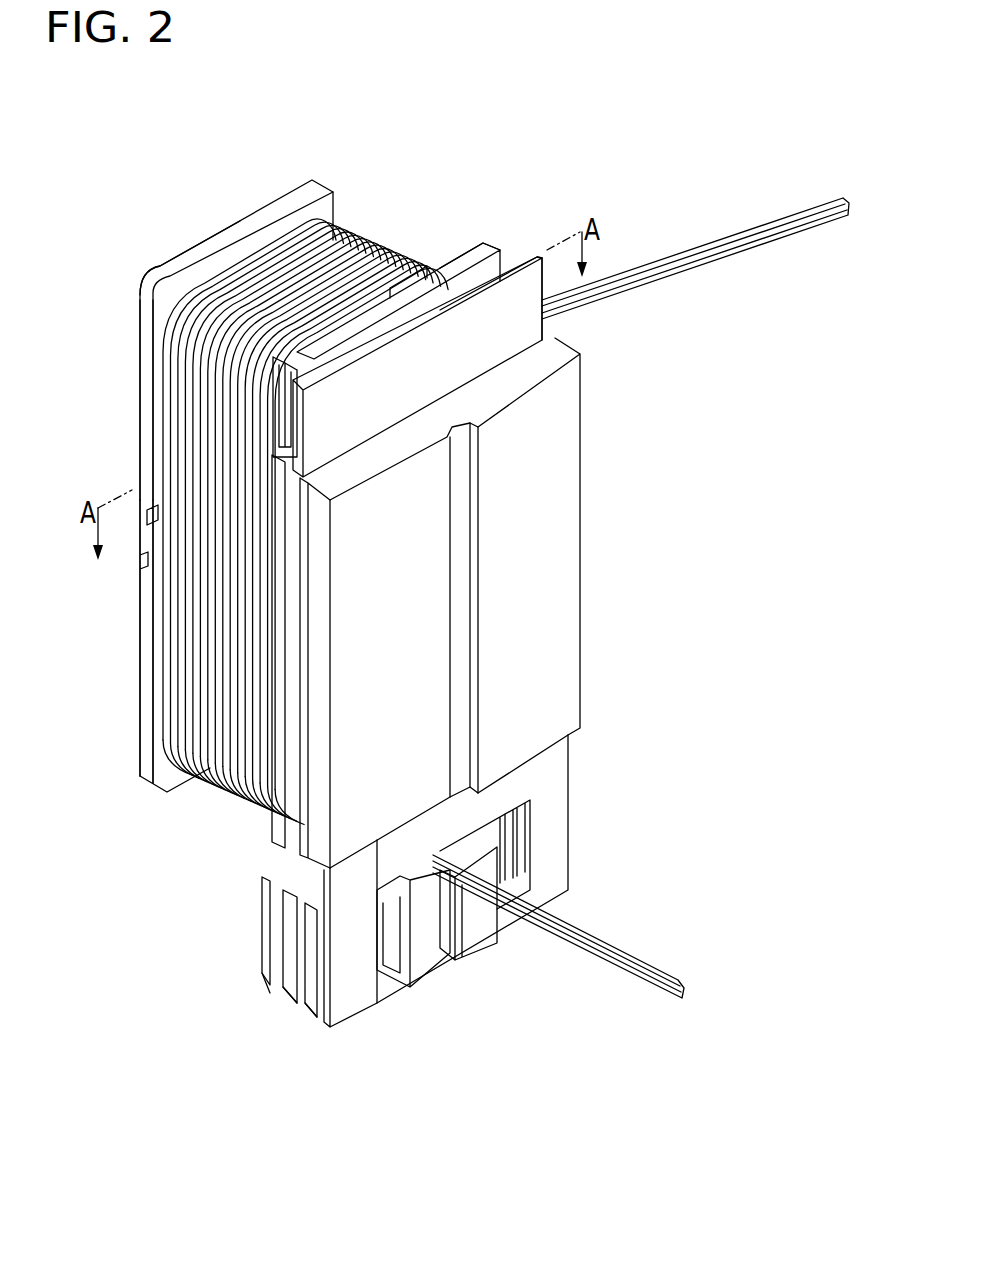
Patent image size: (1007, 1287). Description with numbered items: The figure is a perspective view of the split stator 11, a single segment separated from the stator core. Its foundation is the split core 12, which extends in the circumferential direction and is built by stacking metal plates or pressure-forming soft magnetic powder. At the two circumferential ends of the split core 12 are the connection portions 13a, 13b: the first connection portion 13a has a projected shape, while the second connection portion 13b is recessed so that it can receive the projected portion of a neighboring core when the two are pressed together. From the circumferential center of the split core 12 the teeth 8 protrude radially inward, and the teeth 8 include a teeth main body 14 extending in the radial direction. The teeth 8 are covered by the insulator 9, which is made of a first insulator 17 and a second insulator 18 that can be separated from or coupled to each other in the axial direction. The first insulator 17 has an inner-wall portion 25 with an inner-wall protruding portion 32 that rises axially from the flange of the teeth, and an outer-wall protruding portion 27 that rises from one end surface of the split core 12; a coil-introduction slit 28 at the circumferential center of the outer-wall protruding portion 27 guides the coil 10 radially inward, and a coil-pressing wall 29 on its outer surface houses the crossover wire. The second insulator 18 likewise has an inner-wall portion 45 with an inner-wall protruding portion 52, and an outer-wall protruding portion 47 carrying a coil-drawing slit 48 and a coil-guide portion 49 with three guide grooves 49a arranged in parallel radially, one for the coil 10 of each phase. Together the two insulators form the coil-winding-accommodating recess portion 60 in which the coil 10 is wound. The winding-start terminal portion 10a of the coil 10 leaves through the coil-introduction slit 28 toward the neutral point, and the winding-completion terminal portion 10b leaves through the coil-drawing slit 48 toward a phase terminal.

The teeth 8 is at (580, 630).
The insulator 9 is at (605, 772).
The coil 10 is at (267, 267).
The terminal portion 10a is at (782, 243).
The terminal portion 10b is at (643, 957).
The split stator 11 is at (552, 162).
The split core 12 is at (583, 538).
The connection portion 13a is at (295, 812).
The connection portion 13b is at (550, 327).
The teeth main body 14 is at (235, 742).
The first insulator 17 is at (489, 214).
The second insulator 18 is at (605, 838).
The inner-wall portion 25 is at (147, 423).
The outer-wall protruding portion 27 is at (295, 347).
The coil-introduction slit 28 is at (442, 287).
The coil-pressing wall 29 is at (548, 232).
The inner-wall protruding portion 32 is at (193, 253).
The inner-wall portion 45 is at (147, 603).
The outer-wall protruding portion 47 is at (262, 945).
The coil-drawing slit 48 is at (450, 918).
The coil-guide portion 49 is at (352, 1003).
The guide grooves 49a is at (307, 990).
The inner-wall protruding portion 52 is at (173, 777).
The coil-winding-accommodating recess portion 60 is at (320, 210).